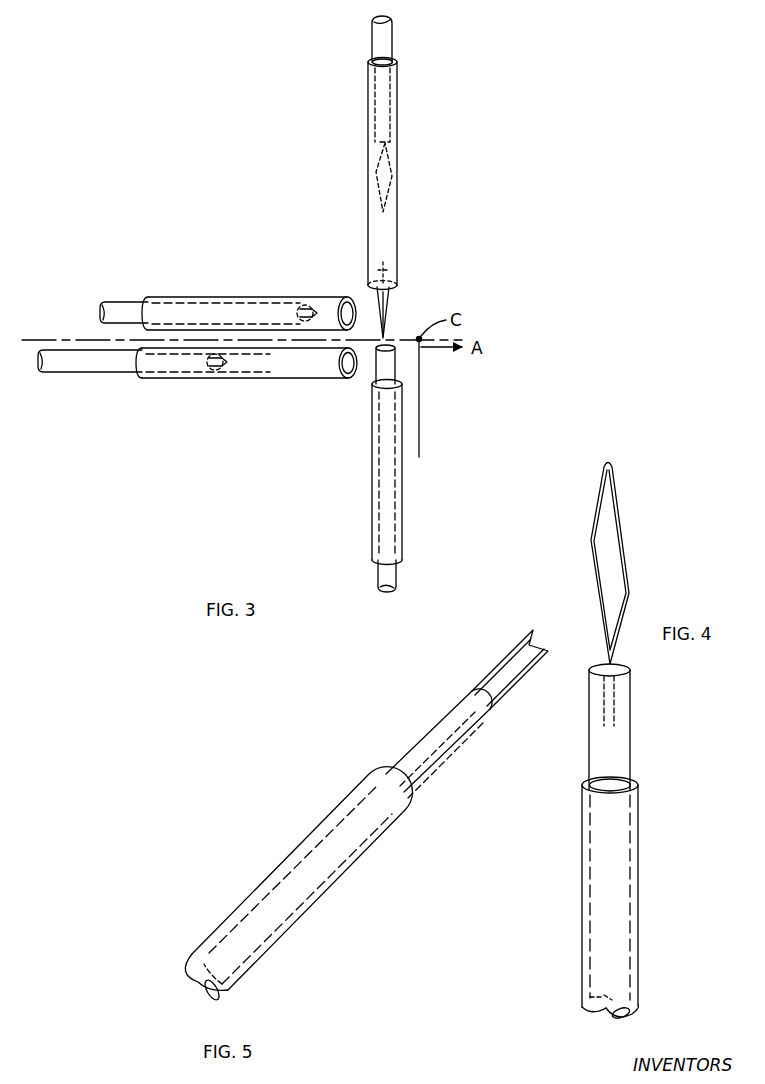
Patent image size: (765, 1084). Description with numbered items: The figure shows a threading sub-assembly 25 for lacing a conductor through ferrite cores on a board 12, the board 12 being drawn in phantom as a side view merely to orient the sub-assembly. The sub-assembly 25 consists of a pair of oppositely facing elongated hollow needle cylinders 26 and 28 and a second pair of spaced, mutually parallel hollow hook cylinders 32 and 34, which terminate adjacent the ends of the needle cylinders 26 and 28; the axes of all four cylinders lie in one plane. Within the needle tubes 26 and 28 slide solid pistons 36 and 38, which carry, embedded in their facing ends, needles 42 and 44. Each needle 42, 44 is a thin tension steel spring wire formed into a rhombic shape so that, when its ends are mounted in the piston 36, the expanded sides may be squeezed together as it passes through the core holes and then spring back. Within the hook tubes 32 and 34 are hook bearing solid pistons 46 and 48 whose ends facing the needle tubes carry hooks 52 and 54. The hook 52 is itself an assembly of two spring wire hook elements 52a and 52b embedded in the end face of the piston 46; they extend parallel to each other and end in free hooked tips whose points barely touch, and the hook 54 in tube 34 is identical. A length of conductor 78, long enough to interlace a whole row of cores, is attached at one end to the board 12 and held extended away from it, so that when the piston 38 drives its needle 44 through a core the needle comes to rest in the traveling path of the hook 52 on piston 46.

In FIG. 3, the board 12 is at (62, 340).
In FIG. 3, the threading sub-assembly 25 is at (290, 242).
In FIG. 3, the needle cylinder 26 is at (403, 481).
In FIG. 4, the needle cylinder 26 is at (639, 819).
In FIG. 3, the needle cylinder 28 is at (398, 124).
In FIG. 3, the hook cylinder 32 is at (282, 378).
In FIG. 5, the hook cylinder 32 is at (305, 836).
In FIG. 3, the hook cylinder 34 is at (278, 297).
In FIG. 3, the piston 36 is at (398, 574).
In FIG. 4, the piston 36 is at (628, 706).
In FIG. 3, the piston 38 is at (393, 42).
In FIG. 3, the needle 42 is at (392, 302).
In FIG. 4, the needle 42 is at (626, 552).
In FIG. 3, the needle 44 is at (390, 190).
In FIG. 3, the hook bearing piston 46 is at (58, 372).
In FIG. 3, the hook bearing piston 48 is at (121, 300).
In FIG. 3, the hook 52 is at (217, 371).
In FIG. 5, the hook 52 is at (502, 664).
In FIG. 5, the hook element 52a is at (476, 688).
In FIG. 5, the hook element 52b is at (500, 698).
In FIG. 3, the hook 54 is at (324, 299).
In FIG. 3, the conductor 78 is at (421, 438).